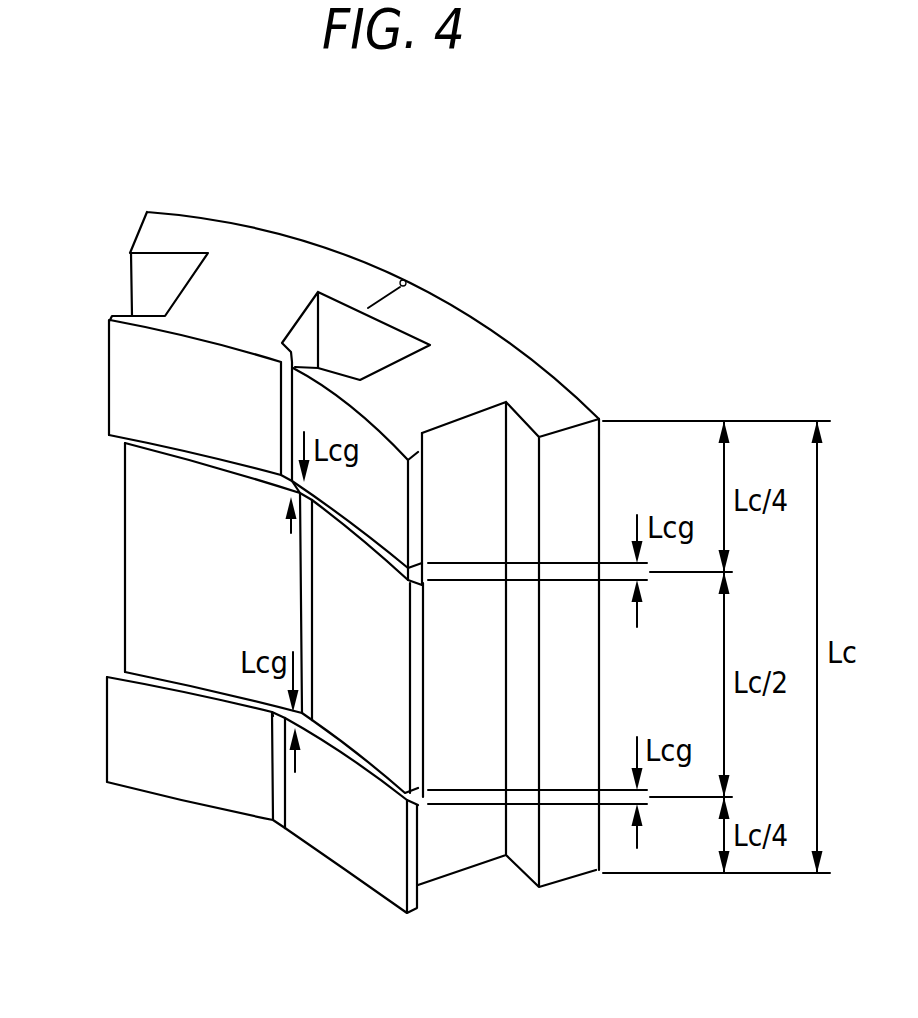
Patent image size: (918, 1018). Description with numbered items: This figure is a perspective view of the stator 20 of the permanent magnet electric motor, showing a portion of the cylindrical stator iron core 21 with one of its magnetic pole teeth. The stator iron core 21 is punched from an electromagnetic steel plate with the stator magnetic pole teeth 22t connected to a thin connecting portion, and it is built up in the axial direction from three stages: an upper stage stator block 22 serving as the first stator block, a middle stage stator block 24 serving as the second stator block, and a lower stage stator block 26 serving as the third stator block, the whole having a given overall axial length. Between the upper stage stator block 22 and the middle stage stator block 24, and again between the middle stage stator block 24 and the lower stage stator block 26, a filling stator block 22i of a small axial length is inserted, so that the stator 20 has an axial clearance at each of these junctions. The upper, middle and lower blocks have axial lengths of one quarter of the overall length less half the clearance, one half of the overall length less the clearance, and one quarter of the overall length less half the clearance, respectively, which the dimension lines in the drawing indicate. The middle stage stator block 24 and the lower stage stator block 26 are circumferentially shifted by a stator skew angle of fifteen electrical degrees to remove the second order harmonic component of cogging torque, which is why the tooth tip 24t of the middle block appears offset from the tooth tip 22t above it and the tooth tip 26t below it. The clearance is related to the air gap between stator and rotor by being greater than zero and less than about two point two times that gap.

The stator 20 is at (382, 236).
The stator iron core 21 is at (202, 228).
The upper stage stator block 22 is at (120, 378).
The stator magnetic pole teeth 22t is at (440, 378).
The filling stator block 22i is at (125, 443).
The middle stage stator block 24 is at (128, 548).
The stator magnetic pole teeth of middle stage stator block 24t is at (337, 717).
The lower stage stator block 26 is at (120, 736).
The stator magnetic pole teeth of lower stage stator block 26t is at (377, 873).